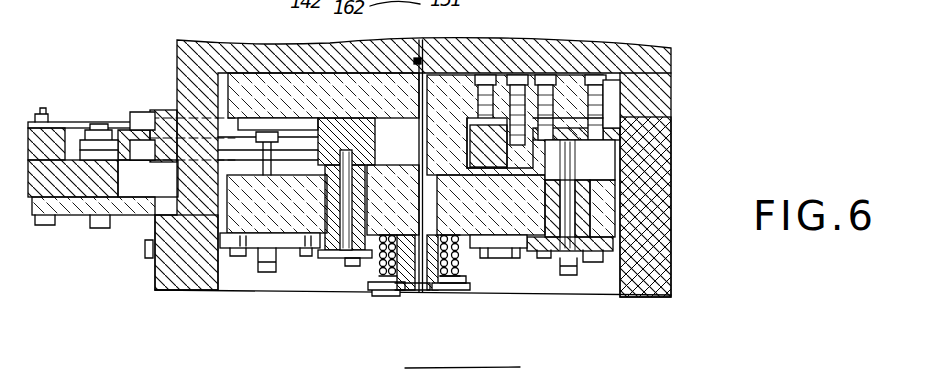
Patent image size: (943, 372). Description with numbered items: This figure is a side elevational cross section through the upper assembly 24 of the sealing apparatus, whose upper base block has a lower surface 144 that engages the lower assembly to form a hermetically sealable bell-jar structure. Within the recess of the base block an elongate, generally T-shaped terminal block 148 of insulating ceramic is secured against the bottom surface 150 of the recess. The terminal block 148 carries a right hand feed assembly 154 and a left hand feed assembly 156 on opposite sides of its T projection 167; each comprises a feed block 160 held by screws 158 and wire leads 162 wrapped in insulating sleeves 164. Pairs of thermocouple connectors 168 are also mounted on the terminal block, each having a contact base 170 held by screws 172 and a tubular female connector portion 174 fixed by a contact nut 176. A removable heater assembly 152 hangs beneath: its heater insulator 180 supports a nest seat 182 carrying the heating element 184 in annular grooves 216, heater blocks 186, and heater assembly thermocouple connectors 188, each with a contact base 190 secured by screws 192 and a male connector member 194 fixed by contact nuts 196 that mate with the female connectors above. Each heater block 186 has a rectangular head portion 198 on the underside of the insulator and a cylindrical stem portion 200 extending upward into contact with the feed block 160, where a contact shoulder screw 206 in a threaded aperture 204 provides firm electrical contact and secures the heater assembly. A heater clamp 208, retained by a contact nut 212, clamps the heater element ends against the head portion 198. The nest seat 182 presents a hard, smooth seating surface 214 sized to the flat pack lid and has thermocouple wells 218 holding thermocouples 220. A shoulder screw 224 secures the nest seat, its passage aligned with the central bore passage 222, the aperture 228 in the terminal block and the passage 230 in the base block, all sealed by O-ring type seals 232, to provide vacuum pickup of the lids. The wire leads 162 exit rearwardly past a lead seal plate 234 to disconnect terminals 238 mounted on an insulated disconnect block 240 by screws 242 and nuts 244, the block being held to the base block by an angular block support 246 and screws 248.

The upper assembly 24 is at (676, 58).
The lower surface 144 is at (660, 296).
The terminal block 148 is at (640, 100).
The bottom surface 150 is at (625, 84).
The heater assembly 152 is at (624, 226).
The right hand feed assembly 154 is at (365, 72).
The left hand feed assembly 156 is at (470, 142).
The screws 158 is at (506, 76).
The feed block 160 is at (324, 118).
The wire leads 162 is at (120, 146).
The insulating sleeves 164 is at (142, 118).
The T projection 167 is at (491, 216).
The thermocouple connectors 168 is at (292, 72).
The contact base 170 is at (640, 122).
The screws 172 is at (577, 78).
The female connector portion 174 is at (580, 188).
The contact nut 176 is at (576, 121).
The heater insulator 180 is at (640, 172).
The nest seat 182 is at (462, 272).
The heating element 184 is at (395, 288).
The heater blocks 186 is at (303, 242).
The heater assembly thermocouple connectors 188 is at (237, 262).
The contact base 190 is at (640, 251).
The screws 192 is at (238, 255).
The male connector member 194 is at (640, 198).
The contact nuts 196 is at (567, 282).
The head portion 198 is at (322, 248).
The stem portion 200 is at (356, 196).
The threaded aperture 204 is at (332, 118).
The contact shoulder screw 206 is at (280, 258).
The heater clamp 208 is at (372, 280).
The contact nut 212 is at (394, 194).
The seating surface 214 is at (410, 294).
The annular grooves 216 is at (390, 241).
The thermocouple wells 218 is at (437, 291).
The thermocouples 220 is at (468, 291).
The central bore passage 222 is at (421, 298).
The shoulder screw 224 is at (440, 168).
The aperture 228 is at (450, 118).
The passage 230 is at (436, 62).
The O-ring type seals 232 is at (417, 58).
The lead seal plate 234 is at (170, 108).
The disconnect terminals 238 is at (148, 163).
The disconnect block 240 is at (60, 190).
The screws 242 is at (42, 112).
The nuts 244 is at (58, 118).
The block support 246 is at (147, 214).
The screws 248 is at (50, 226).